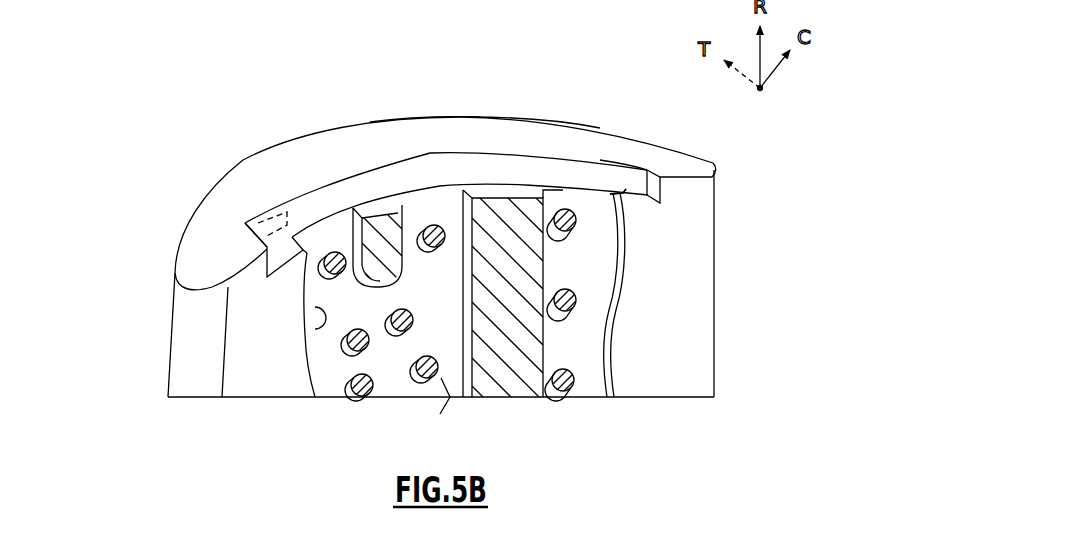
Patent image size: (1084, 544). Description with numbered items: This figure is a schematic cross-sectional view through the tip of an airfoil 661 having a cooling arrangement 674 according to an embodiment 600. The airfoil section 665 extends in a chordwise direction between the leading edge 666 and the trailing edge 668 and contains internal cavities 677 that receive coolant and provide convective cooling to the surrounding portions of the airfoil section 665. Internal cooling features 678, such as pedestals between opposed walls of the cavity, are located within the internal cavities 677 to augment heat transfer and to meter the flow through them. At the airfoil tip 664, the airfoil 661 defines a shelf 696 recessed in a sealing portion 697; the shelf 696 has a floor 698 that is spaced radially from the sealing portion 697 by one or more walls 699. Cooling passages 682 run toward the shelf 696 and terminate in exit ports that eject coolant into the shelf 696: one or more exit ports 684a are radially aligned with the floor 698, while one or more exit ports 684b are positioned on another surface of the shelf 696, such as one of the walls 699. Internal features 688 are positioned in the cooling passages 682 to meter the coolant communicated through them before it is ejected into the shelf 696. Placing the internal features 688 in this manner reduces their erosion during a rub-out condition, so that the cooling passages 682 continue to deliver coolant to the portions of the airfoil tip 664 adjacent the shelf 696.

The embodiment 600 is at (130, 60).
The airfoil 661 is at (112, 120).
The airfoil tip 664 is at (200, 247).
The airfoil section 665 is at (143, 372).
The leading edge 666 is at (172, 338).
The trailing edge 668 is at (716, 326).
The cooling arrangement 674 is at (277, 130).
The internal cavity 677 is at (331, 376).
The internal cooling feature 678 is at (418, 376).
The cooling passage 682 is at (330, 225).
The exit port 684a is at (628, 194).
The exit port 684b is at (267, 222).
The internal feature 688 is at (312, 268).
The shelf 696 is at (485, 148).
The sealing portion 697 is at (388, 137).
The floor 698 is at (483, 195).
The wall 699 is at (627, 168).